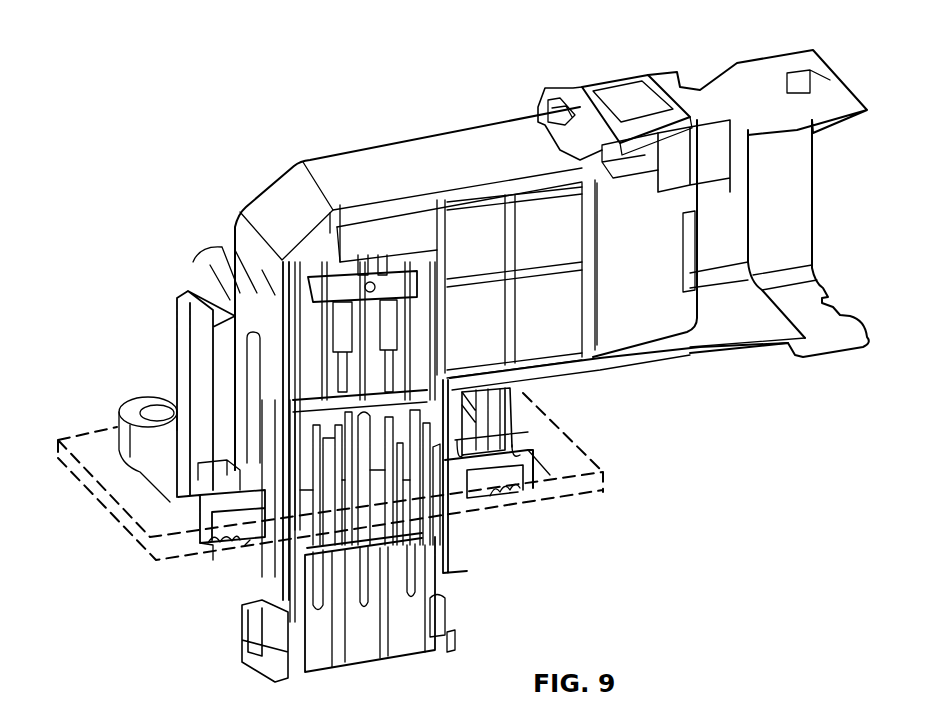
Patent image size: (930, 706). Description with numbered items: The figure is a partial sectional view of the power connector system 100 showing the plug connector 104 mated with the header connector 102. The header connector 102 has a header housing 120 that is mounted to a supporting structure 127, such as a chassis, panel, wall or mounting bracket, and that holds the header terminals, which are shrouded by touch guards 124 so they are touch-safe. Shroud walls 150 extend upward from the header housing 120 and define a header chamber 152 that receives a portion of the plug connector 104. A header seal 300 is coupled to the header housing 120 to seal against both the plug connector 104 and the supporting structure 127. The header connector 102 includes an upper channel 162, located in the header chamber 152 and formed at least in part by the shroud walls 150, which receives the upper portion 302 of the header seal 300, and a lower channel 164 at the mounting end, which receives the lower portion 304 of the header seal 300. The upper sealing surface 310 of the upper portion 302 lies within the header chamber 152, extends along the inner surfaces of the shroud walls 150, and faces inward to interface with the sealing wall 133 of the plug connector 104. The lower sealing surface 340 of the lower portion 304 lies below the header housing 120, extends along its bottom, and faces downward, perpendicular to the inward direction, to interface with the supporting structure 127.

The power connector system 100 is at (196, 172).
The header connector 102 is at (153, 557).
The plug connector 104 is at (715, 47).
The header housing 120 is at (457, 505).
The touch guards 124 is at (213, 540).
The supporting structure 127 is at (90, 483).
The sealing wall 133 is at (267, 430).
The shroud walls 150 is at (253, 403).
The header chamber 152 is at (259, 367).
The upper channel 162 is at (210, 522).
The lower channel 164 is at (251, 462).
The header seal 300 is at (521, 476).
The upper portion 302 is at (465, 432).
The lower portion 304 is at (515, 490).
The upper sealing surface 310 is at (530, 450).
The lower sealing surface 340 is at (493, 498).